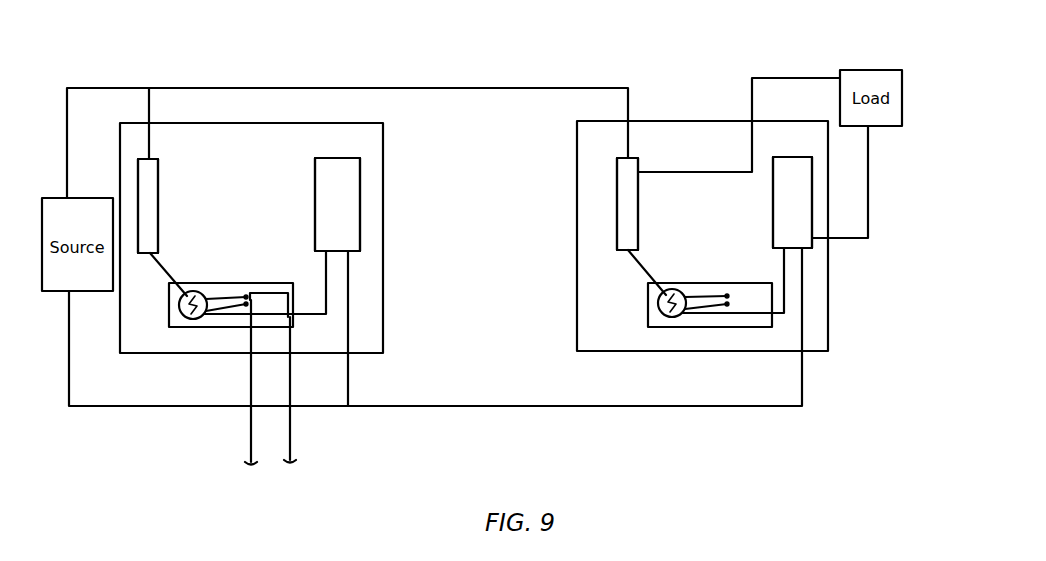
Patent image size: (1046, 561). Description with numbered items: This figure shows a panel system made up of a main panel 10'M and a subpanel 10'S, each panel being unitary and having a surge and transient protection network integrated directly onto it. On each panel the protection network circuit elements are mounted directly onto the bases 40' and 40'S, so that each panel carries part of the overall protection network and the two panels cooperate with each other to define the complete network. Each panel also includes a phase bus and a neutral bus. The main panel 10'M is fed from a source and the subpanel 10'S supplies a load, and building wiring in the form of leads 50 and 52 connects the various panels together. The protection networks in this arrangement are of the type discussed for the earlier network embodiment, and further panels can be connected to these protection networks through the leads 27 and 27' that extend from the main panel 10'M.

The lead 50 is at (469, 87).
The lead 52 is at (491, 408).
The main panel 10'M is at (253, 223).
The subpanel 10'S is at (666, 236).
The base 40' is at (249, 172).
The base 40'S is at (714, 165).
The lead 27 is at (233, 382).
The lead 27' is at (313, 390).